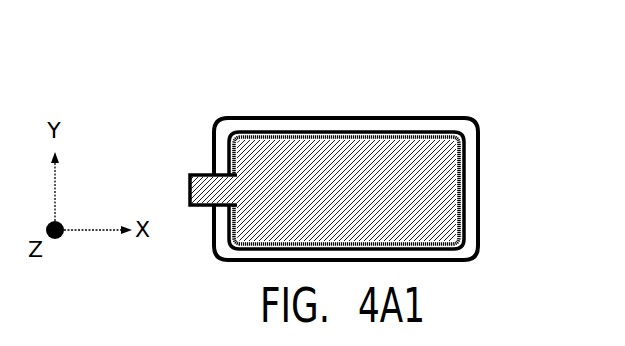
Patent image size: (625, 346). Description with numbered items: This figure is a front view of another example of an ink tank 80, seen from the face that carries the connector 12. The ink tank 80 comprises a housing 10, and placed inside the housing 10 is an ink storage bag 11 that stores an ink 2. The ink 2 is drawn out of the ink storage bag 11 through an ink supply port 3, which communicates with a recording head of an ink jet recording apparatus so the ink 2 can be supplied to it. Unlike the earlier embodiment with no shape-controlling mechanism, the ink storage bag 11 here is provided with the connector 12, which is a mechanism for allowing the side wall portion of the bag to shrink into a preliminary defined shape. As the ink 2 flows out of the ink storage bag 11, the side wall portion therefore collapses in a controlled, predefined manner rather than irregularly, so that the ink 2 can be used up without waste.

The ink tank 80 is at (432, 88).
The housing 10 is at (350, 118).
The ink storage bag 11 is at (267, 131).
The ink 2 is at (457, 126).
The connector 12 is at (473, 240).
The ink supply port 3 is at (190, 183).